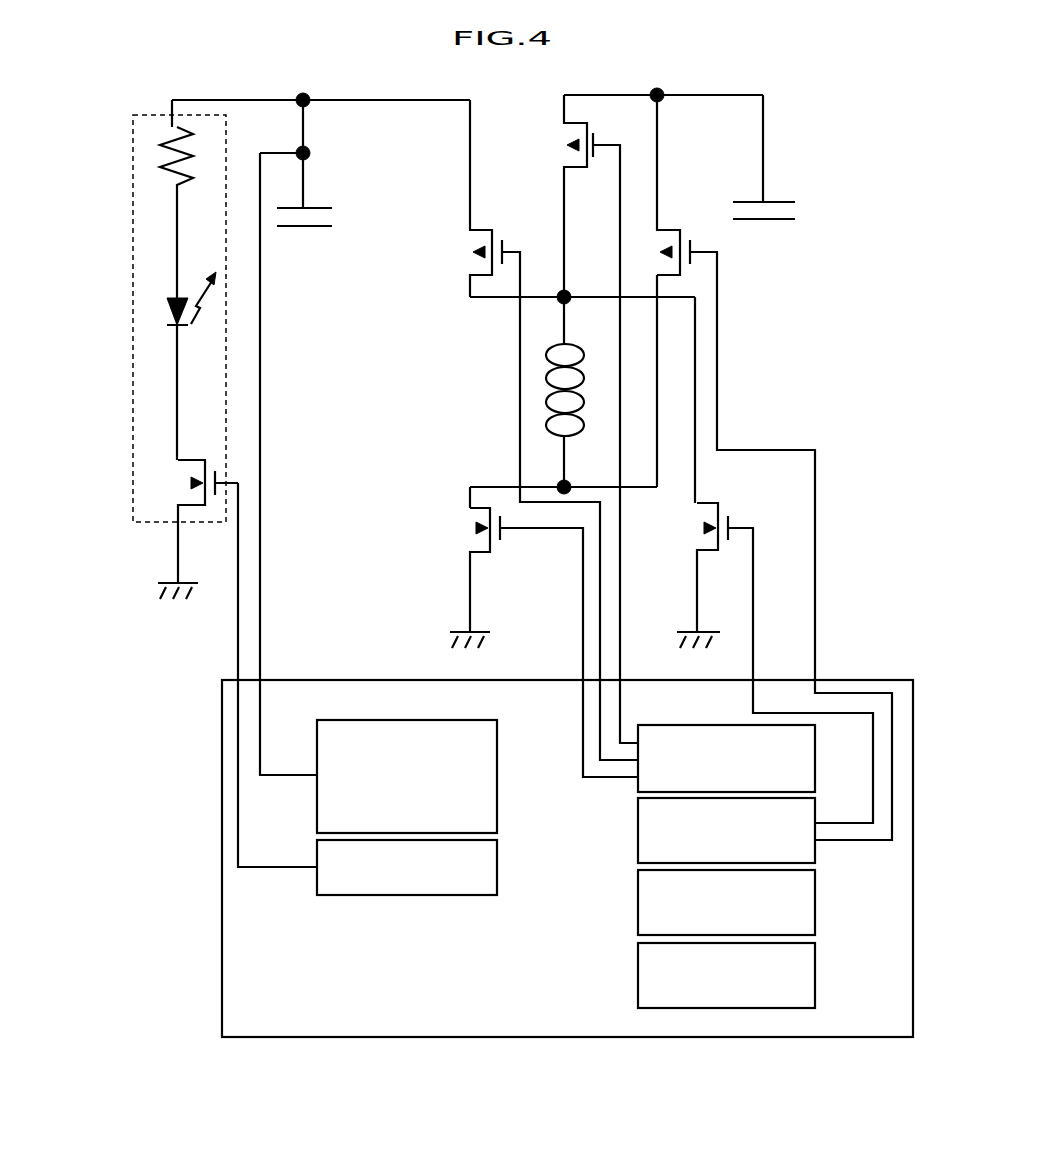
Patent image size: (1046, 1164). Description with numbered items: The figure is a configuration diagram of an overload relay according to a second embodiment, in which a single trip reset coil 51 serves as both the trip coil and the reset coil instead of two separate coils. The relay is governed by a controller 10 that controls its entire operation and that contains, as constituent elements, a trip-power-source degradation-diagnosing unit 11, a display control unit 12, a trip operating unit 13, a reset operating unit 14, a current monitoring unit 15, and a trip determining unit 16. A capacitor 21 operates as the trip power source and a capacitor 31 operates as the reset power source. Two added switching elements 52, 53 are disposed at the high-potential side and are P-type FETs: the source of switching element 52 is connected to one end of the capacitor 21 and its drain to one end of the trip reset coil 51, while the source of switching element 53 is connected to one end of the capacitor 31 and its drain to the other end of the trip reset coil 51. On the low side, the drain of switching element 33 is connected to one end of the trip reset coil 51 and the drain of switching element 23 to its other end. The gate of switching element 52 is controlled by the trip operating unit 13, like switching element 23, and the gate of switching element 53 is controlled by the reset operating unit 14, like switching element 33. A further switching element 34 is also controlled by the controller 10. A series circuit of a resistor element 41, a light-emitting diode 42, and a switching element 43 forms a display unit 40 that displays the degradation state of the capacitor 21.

The controller 10 is at (833, 1039).
The trip-power-source degradation-diagnosing unit 11 is at (498, 780).
The display control unit 12 is at (498, 868).
The trip operating unit 13 is at (818, 763).
The reset operating unit 14 is at (818, 813).
The current monitoring unit 15 is at (818, 905).
The trip determining unit 16 is at (818, 976).
The capacitor 21 is at (330, 216).
The switching element 23 is at (468, 537).
The capacitor 31 is at (790, 213).
The switching element 33 is at (700, 502).
The switching element 34 is at (577, 168).
The display unit 40 is at (155, 522).
The resistor element 41 is at (158, 156).
The light-emitting diode 42 is at (168, 318).
The switching element 43 is at (178, 487).
The trip reset coil 51 is at (547, 409).
The switching element 52 is at (478, 229).
The switching element 53 is at (665, 229).